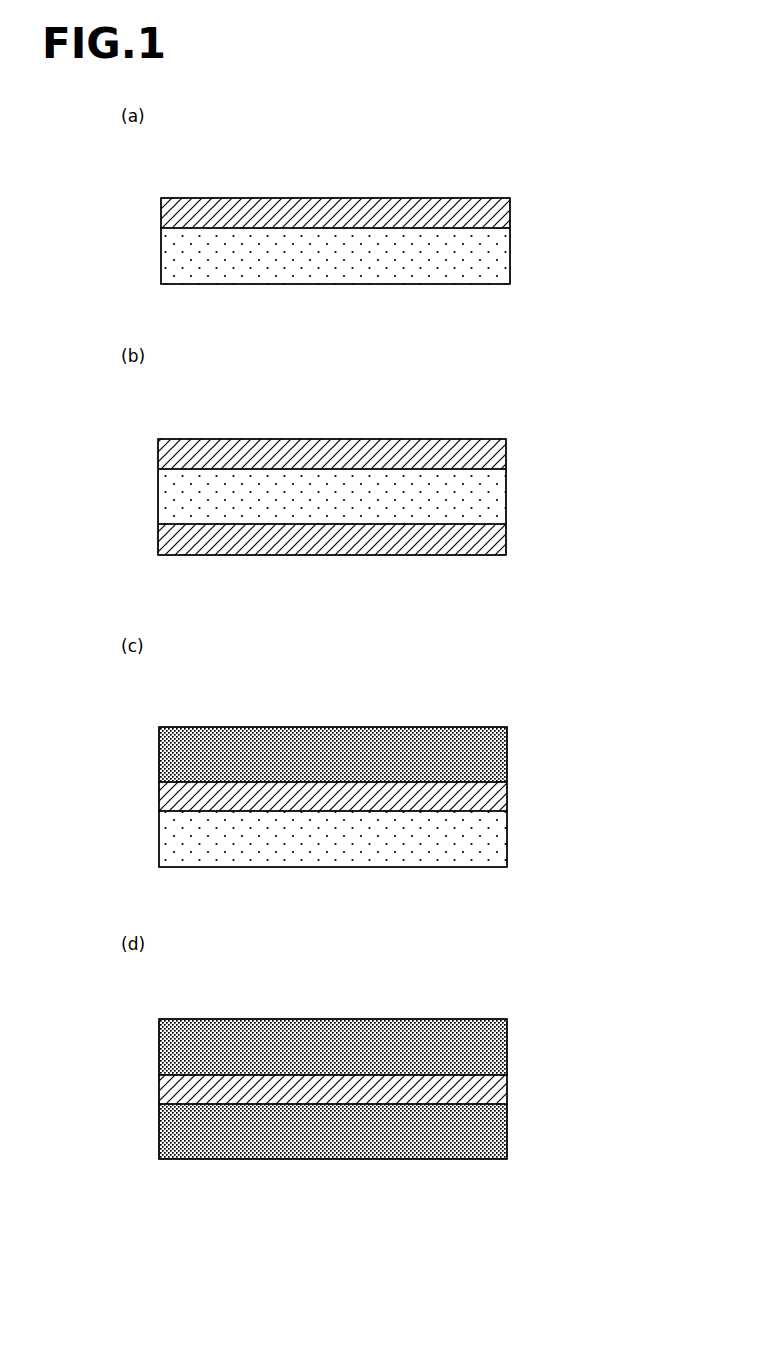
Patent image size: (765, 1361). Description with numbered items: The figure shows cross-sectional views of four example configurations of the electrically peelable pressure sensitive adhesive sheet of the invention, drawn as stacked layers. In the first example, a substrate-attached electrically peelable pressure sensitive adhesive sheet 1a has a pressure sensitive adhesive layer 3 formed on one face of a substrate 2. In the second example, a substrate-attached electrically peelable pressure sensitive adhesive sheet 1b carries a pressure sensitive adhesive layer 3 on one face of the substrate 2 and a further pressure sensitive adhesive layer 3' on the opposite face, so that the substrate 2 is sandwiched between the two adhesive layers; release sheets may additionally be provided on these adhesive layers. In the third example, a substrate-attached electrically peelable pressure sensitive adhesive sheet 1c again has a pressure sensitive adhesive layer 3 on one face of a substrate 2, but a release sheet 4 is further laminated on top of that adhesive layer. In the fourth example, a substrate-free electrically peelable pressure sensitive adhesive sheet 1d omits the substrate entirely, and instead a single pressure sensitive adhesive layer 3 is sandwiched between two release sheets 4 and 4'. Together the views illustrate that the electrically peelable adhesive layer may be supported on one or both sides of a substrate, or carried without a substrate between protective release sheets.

The substrate-attached electrically peelable pressure sensitive adhesive sheet 1a is at (494, 153).
The substrate-attached electrically peelable pressure sensitive adhesive sheet 1b is at (488, 399).
The substrate-attached electrically peelable pressure sensitive adhesive sheet 1c is at (490, 691).
The substrate-free electrically peelable pressure sensitive adhesive sheet 1d is at (490, 986).
The substrate 2 is at (492, 263).
The pressure sensitive adhesive layer 3 is at (400, 650).
The pressure sensitive adhesive layer 3' is at (401, 538).
The release sheet 4 is at (401, 901).
The release sheet 4' is at (403, 1131).